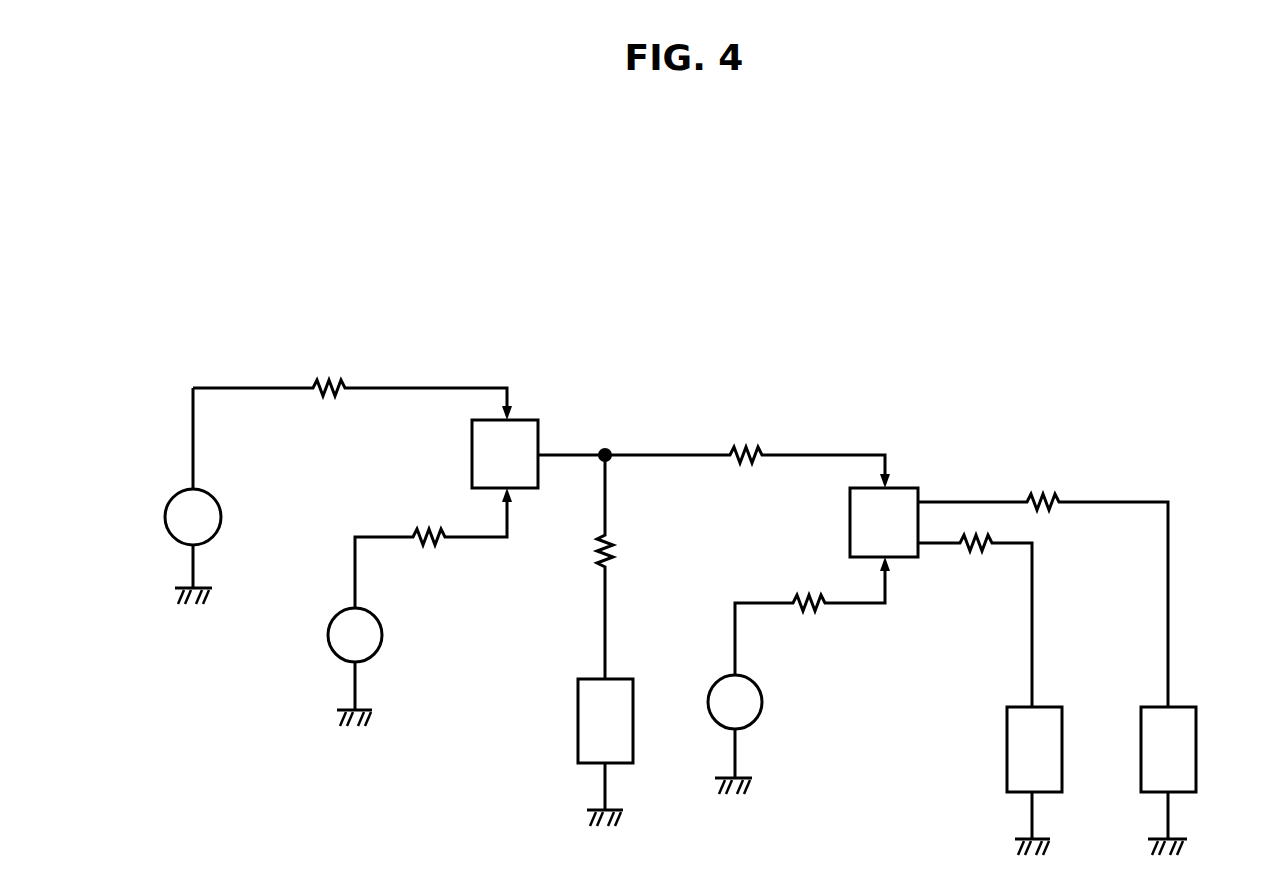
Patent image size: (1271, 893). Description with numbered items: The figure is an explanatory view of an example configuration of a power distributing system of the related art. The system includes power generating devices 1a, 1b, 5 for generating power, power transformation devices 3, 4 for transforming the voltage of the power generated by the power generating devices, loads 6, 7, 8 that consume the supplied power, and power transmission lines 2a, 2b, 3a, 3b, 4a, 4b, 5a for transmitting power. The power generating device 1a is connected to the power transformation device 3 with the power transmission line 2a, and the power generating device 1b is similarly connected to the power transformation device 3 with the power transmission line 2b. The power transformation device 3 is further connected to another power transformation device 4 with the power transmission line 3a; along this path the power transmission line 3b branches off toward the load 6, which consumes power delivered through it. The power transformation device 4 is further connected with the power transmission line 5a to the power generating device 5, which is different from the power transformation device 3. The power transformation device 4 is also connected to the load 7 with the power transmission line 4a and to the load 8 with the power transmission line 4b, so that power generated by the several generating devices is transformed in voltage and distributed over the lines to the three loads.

The power generating device 1a is at (165, 515).
The power generating device 1b is at (382, 632).
The power transmission line 2a is at (425, 388).
The power transmission line 2b is at (385, 537).
The power transformation device 3 is at (472, 453).
The power transmission line 3a is at (665, 455).
The power transmission line 3b is at (605, 612).
The power transformation device 4 is at (850, 520).
The power transmission line 4a is at (1032, 575).
The power transmission line 4b is at (1168, 612).
The power generating device 5 is at (762, 697).
The power transmission line 5a is at (765, 603).
The load 6 is at (578, 717).
The load 7 is at (1062, 748).
The load 8 is at (1196, 748).